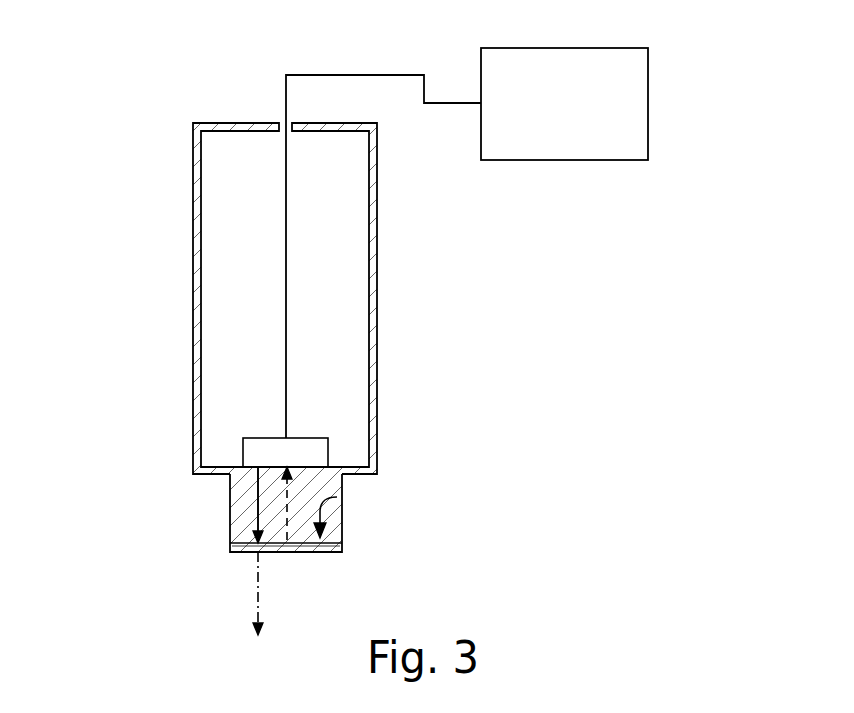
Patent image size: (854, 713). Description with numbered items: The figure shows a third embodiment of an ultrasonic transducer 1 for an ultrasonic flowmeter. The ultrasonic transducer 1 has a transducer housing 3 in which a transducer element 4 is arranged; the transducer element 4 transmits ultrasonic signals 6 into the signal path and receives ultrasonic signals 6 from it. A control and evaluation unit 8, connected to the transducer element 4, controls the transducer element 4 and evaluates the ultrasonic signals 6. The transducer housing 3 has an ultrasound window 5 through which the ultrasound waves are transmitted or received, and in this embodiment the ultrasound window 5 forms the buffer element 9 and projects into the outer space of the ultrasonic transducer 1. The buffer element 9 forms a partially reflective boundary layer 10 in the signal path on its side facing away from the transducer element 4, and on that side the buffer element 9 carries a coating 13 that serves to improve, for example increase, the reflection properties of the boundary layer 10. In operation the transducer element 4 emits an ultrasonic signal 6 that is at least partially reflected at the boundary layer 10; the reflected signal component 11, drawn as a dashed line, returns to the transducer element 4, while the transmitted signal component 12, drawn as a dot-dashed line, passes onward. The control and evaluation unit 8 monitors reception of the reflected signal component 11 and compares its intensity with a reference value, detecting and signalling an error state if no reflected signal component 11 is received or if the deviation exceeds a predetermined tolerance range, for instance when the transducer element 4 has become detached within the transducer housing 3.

The ultrasonic transducer 1 is at (88, 74).
The transducer housing 3 is at (370, 298).
The transducer element 4 is at (253, 445).
The ultrasound window 5 is at (328, 482).
The ultrasonic signal 6 is at (258, 525).
The control and evaluation unit 8 is at (633, 104).
The buffer element 9 is at (332, 498).
The boundary layer 10 is at (335, 502).
The reflected signal component 11 is at (280, 482).
The transmitted signal component 12 is at (258, 606).
The coating 13 is at (333, 548).